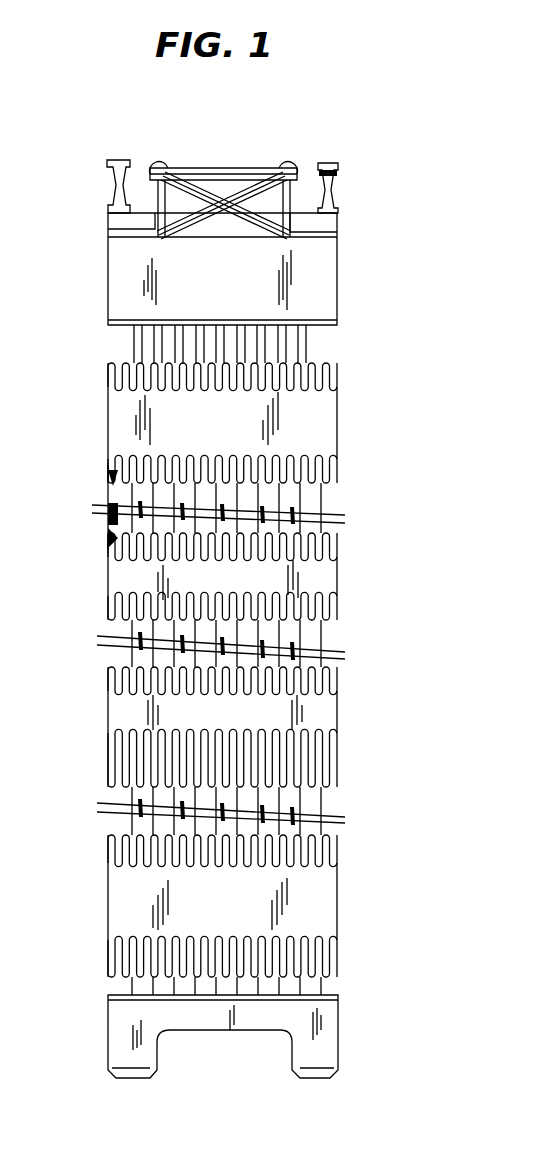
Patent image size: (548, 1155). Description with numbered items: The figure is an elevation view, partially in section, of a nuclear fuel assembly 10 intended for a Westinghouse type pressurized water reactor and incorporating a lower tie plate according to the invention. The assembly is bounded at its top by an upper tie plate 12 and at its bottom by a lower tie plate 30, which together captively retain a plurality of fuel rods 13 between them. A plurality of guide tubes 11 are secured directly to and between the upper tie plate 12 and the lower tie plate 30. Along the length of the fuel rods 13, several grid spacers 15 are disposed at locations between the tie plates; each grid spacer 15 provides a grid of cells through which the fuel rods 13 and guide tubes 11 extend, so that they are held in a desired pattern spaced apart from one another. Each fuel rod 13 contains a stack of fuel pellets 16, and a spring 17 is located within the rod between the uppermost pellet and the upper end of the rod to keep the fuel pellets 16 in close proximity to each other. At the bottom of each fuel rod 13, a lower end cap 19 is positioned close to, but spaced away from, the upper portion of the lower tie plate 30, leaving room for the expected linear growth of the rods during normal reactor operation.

The nuclear fuel assembly 10 is at (486, 661).
The guide tubes 11 is at (130, 343).
The upper tie plate 12 is at (362, 245).
The fuel rods 13 is at (338, 480).
The grid spacers 15 is at (128, 577).
The fuel pellets 16 is at (108, 518).
The spring 17 is at (108, 495).
The lower end cap 19 is at (335, 982).
The lower tie plate 30 is at (320, 1048).